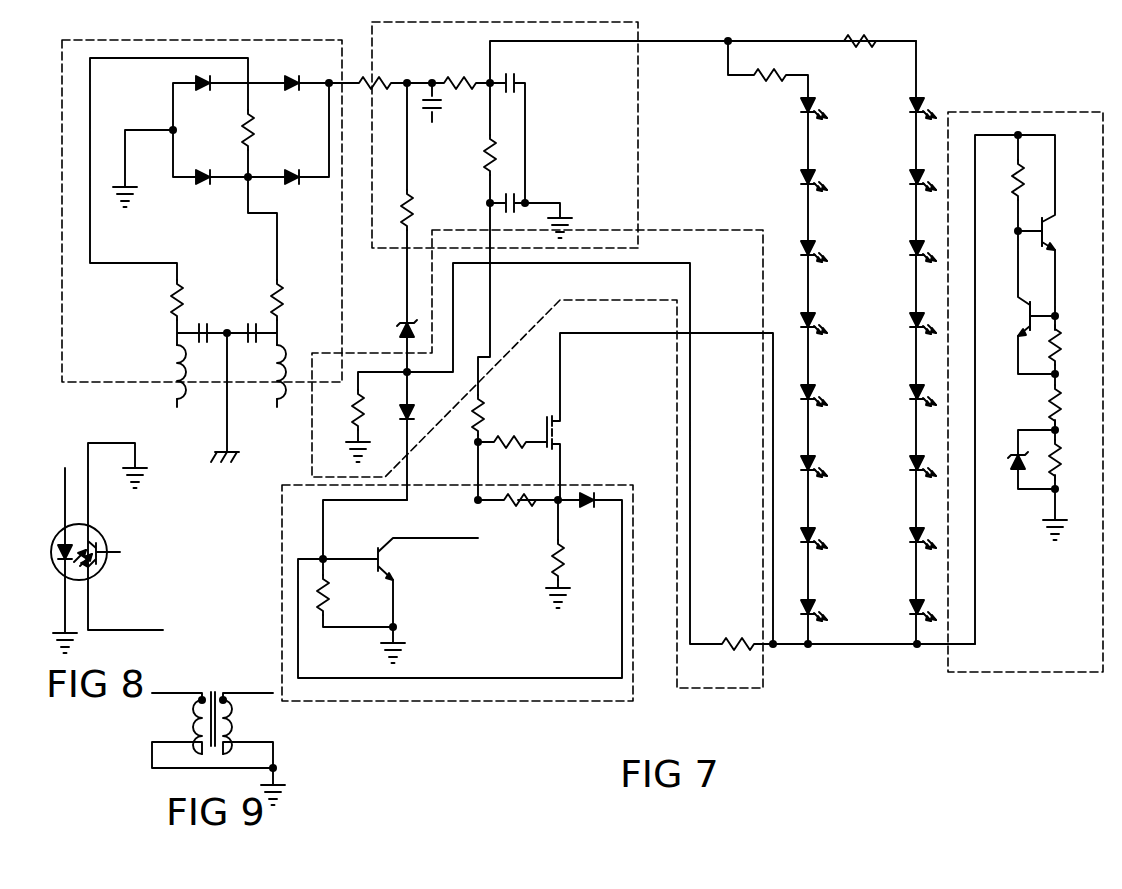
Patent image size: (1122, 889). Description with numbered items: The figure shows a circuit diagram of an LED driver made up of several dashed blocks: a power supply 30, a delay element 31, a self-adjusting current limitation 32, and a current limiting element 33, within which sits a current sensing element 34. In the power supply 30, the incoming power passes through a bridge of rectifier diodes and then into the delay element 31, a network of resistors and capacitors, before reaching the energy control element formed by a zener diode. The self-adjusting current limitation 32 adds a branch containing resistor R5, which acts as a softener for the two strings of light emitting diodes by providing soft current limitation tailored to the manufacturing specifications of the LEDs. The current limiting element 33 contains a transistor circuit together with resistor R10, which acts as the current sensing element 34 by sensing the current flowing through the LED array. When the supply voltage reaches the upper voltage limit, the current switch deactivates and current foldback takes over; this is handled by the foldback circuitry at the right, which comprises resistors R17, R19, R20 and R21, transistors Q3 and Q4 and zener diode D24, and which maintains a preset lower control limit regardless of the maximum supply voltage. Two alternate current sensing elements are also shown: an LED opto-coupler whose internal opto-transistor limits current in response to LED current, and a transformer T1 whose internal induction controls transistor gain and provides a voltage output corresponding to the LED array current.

In FIG. 7, the power supply 30 is at (94, 384).
In FIG. 7, the delay element 31 is at (638, 28).
In FIG. 7, the self-adjusting current limitation 32 is at (643, 382).
In FIG. 7, the current limiting element 33 is at (486, 607).
In FIG. 7, the current sensing element 34 is at (572, 614).
In FIG. 7, the resistor R5 is at (738, 633).
In FIG. 7, the resistor R10 is at (578, 560).
In FIG. 7, the resistor R17 is at (1000, 180).
In FIG. 7, the resistor R19 is at (1074, 345).
In FIG. 7, the resistor R20 is at (1074, 405).
In FIG. 7, the resistor R21 is at (1074, 460).
In FIG. 7, the transistor Q3 is at (1060, 232).
In FIG. 7, the transistor Q4 is at (1013, 316).
In FIG. 7, the zener diode D24 is at (1002, 450).
In FIG. 9, the transformer T1 is at (212, 730).